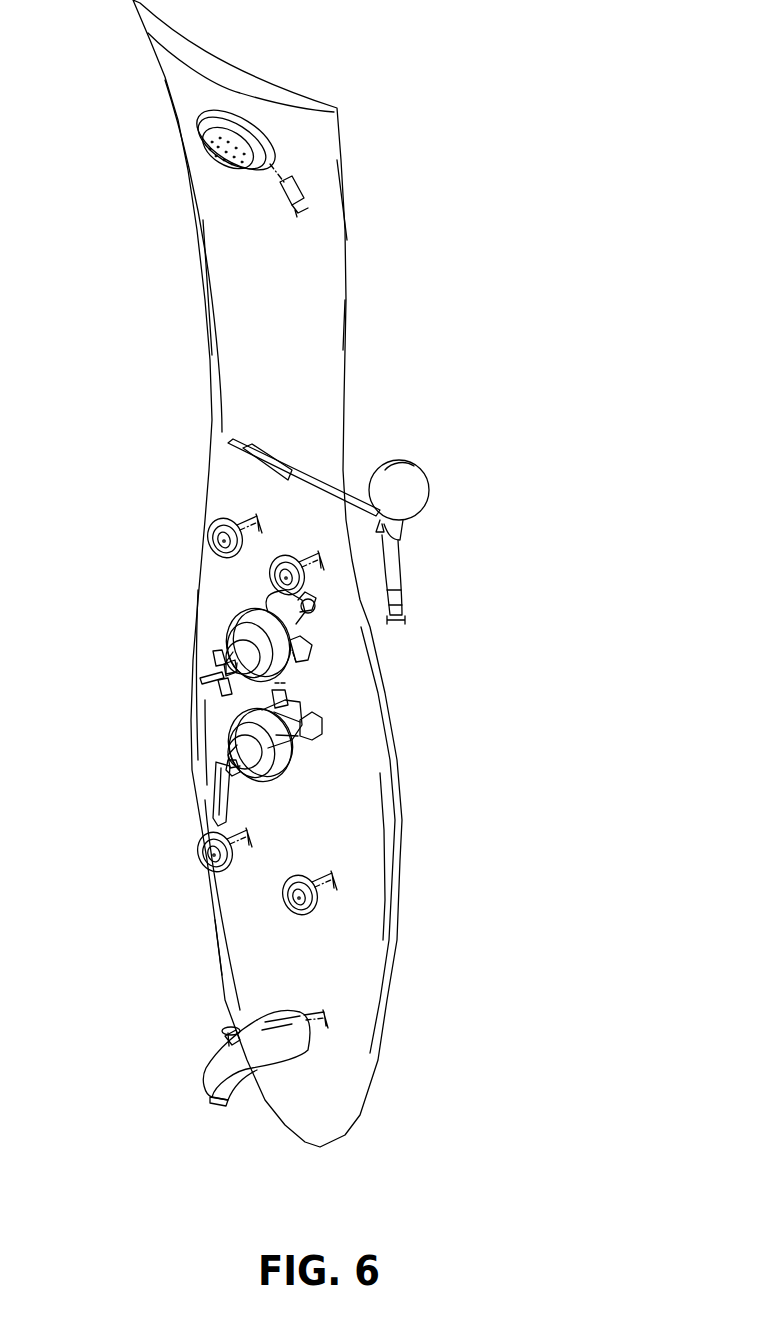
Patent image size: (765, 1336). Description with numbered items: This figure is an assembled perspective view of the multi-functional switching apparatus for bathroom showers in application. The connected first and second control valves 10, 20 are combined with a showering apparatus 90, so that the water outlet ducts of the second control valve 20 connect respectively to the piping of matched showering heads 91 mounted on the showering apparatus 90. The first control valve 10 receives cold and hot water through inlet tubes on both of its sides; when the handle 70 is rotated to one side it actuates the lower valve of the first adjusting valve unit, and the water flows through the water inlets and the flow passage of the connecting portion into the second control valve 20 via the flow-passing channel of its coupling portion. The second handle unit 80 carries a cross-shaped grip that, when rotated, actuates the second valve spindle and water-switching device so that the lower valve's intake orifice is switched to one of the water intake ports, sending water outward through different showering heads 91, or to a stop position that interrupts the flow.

The first control valve 10 is at (308, 760).
The second control valve 20 is at (322, 652).
The first handle unit 70 is at (216, 733).
The second handle unit 80 is at (207, 640).
The showering apparatus 90 is at (452, 824).
The showering head 91 is at (283, 147).